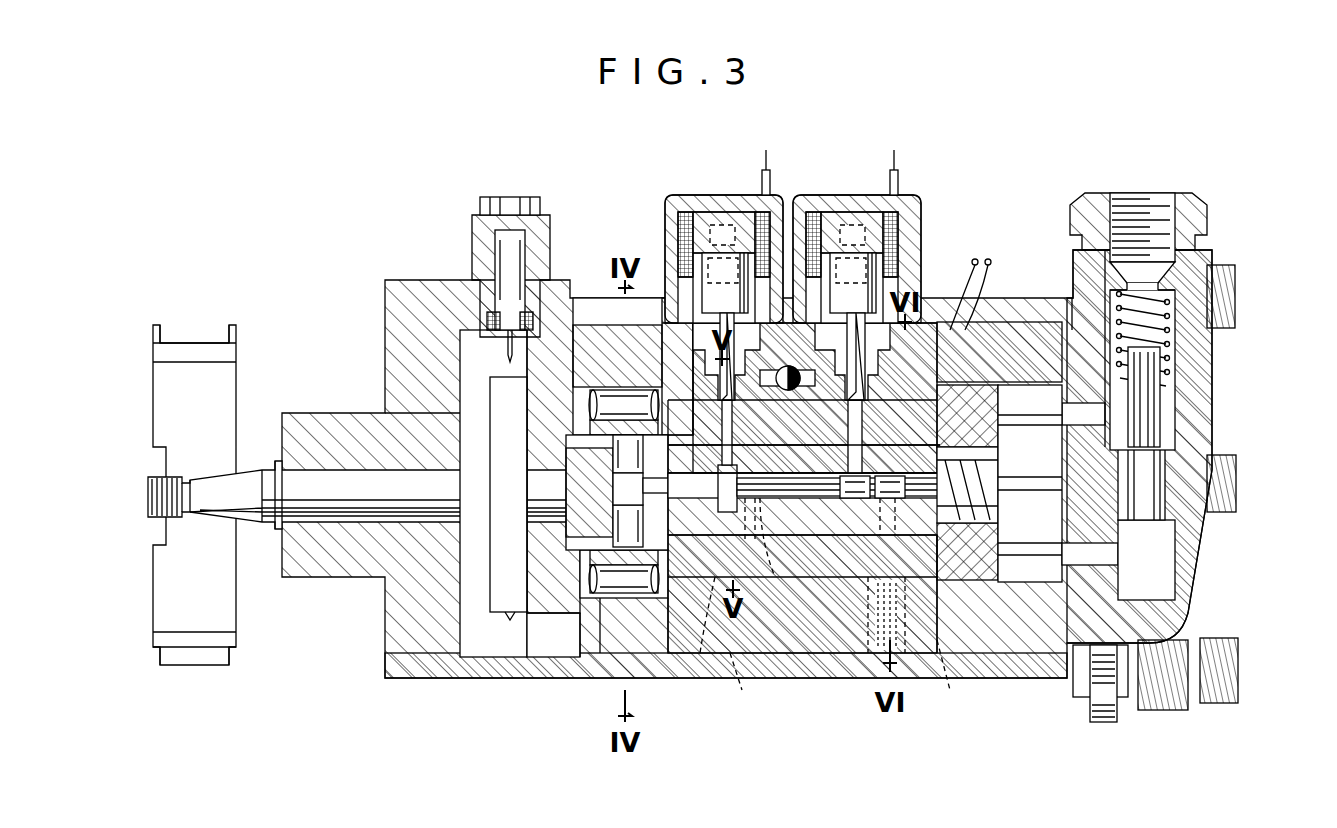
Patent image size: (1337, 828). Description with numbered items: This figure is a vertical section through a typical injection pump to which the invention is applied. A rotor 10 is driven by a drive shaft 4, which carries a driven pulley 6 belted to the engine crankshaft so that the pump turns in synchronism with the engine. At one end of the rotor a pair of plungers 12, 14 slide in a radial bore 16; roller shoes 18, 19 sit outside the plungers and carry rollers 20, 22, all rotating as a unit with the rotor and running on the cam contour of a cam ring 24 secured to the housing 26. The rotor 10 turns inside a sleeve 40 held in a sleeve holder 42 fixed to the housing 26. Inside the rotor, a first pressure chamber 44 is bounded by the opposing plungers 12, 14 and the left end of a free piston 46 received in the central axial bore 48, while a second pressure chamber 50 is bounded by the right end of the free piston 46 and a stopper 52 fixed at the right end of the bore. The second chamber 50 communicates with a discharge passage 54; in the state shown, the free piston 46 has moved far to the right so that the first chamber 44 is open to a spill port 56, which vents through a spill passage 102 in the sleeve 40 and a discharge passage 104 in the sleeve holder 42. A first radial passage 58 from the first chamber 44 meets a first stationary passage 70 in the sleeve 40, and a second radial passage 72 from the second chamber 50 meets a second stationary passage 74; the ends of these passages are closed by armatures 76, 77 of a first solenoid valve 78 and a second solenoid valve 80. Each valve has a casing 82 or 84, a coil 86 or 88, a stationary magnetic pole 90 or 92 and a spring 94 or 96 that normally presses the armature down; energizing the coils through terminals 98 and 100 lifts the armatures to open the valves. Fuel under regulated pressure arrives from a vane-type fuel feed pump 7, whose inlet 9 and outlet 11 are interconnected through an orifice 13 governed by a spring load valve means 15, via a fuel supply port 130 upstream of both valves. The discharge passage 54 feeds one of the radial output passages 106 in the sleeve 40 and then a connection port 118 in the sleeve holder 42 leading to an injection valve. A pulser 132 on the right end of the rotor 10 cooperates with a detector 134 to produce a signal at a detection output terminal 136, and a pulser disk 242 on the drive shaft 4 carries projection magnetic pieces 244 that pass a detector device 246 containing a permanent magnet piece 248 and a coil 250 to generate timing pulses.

The drive shaft 4 is at (250, 525).
The driven pulley 6 is at (236, 383).
The vane-type fuel feed pump 7 is at (1215, 335).
The inlet 9 is at (1085, 420).
The rotor 10 is at (560, 540).
The outlet 11 is at (1120, 560).
The plunger 12 is at (625, 462).
The orifice 13 is at (1180, 490).
The plunger 14 is at (625, 520).
The spring load valve means 15 is at (1160, 440).
The radial bore 16 is at (613, 497).
The roller shoe 18 is at (588, 432).
The roller shoe 19 is at (643, 612).
The roller 20 is at (590, 395).
The roller 22 is at (605, 620).
The cam ring 24 is at (577, 680).
The housing 26 is at (600, 678).
The sleeve 40 is at (939, 410).
The sleeve holder 42 is at (999, 352).
The first pressure chamber 44 is at (718, 505).
The free piston 46 is at (790, 530).
The central axial bore 48 is at (748, 533).
The second pressure chamber 50 is at (838, 498).
The stopper 52 is at (967, 513).
The discharge passage 54 is at (885, 535).
The spill port 56 is at (854, 615).
The first radial passage 58 is at (718, 462).
The first stationary passage 70 is at (720, 422).
The second radial passage 72 is at (860, 462).
The second stationary passage 74 is at (850, 425).
The armature 76 is at (690, 350).
The armature 77 is at (905, 268).
The first solenoid valve 78 is at (724, 182).
The second solenoid valve 80 is at (866, 180).
The casing 82 is at (672, 262).
The casing 84 is at (900, 222).
The coil 86 is at (670, 225).
The coil 88 is at (812, 213).
The stationary magnetic pole 90 is at (690, 205).
The stationary magnetic pole 92 is at (892, 195).
The spring 94 is at (730, 215).
The spring 96 is at (858, 215).
The terminal 98 is at (768, 178).
The terminal 100 is at (896, 178).
The spill passage 102 is at (757, 615).
The discharge passage 104 is at (752, 686).
The output passage 106 is at (895, 498).
The connection port 118 is at (965, 677).
The fuel supply port 130 is at (788, 368).
The pulser 132 is at (1000, 525).
The detector 134 is at (1008, 680).
The detection output terminal 136 is at (991, 263).
The pulser disk 242 is at (462, 420).
The projection magnetic piece 244 is at (465, 372).
The detector device 246 is at (475, 245).
The permanent magnet piece 248 is at (513, 345).
The coil 250 is at (485, 320).